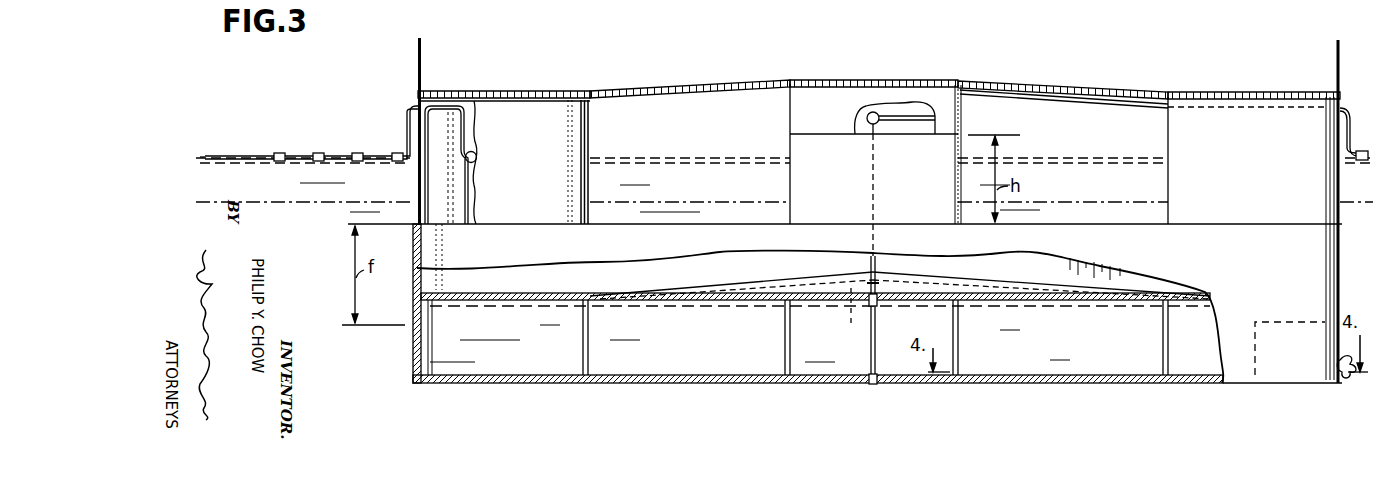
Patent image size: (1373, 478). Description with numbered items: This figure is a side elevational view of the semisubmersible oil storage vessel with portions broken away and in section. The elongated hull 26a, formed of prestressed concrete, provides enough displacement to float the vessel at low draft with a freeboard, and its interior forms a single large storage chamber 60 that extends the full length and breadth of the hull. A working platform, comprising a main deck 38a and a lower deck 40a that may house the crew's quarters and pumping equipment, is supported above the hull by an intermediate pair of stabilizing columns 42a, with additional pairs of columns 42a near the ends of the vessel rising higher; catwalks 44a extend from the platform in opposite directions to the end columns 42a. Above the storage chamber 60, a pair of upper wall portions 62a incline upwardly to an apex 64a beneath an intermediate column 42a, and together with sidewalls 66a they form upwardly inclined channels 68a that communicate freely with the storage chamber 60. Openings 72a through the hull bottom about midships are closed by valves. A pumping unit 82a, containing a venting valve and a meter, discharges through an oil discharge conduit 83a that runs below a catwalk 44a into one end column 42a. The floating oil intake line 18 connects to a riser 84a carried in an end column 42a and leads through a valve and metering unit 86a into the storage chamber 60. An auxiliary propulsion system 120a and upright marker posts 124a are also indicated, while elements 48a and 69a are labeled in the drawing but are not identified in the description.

The floating oil intake line 18 is at (370, 156).
The hull 26a is at (1338, 294).
The main deck 38a is at (812, 80).
The lower deck 40a is at (838, 134).
The stabilizing columns 42a is at (512, 176).
The catwalks 44a is at (650, 88).
The deck rail 48a is at (535, 90).
The storage chamber 60 is at (692, 351).
The upper wall portions 62a is at (720, 284).
The apex 64a is at (868, 271).
The sidewalls 66a is at (897, 286).
The upwardly inclined channels 68a is at (851, 318).
The tank 69a is at (433, 183).
The openings 72a is at (868, 386).
The pumping unit 82a is at (874, 112).
The oil discharge conduit 83a is at (1048, 104).
The riser 84a is at (470, 134).
The valve and metering unit 86a is at (478, 180).
The auxiliary propulsion system 120a is at (1272, 332).
The marker posts and lights 124a is at (421, 47).